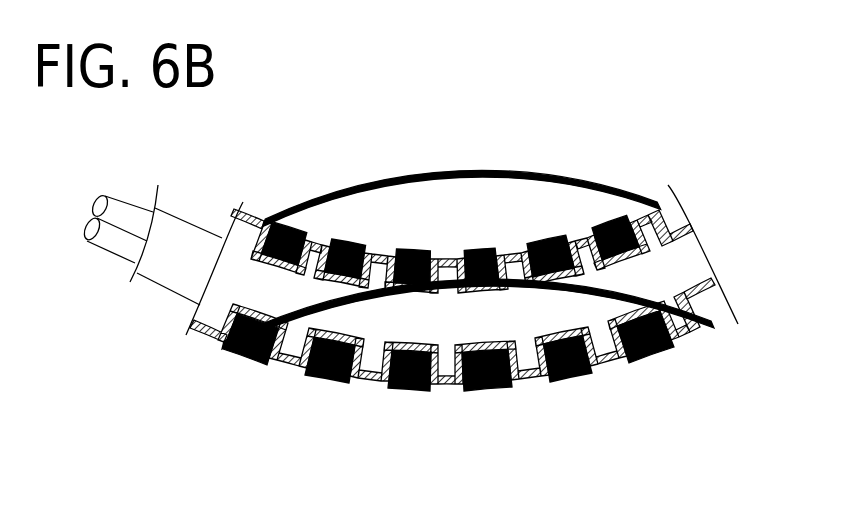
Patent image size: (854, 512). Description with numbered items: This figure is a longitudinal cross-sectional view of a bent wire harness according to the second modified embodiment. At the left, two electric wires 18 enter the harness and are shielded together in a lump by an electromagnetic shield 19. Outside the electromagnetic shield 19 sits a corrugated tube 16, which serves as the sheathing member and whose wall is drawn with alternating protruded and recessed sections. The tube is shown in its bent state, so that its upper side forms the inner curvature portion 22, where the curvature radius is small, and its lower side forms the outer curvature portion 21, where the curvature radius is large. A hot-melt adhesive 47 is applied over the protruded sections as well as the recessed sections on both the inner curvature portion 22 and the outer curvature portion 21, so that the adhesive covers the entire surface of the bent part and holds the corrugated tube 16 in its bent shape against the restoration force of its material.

The corrugated tube 16 is at (253, 207).
The electric wire 18 is at (126, 197).
The electromagnetic shield 19 is at (192, 221).
The outer curvature portion 21 is at (197, 428).
The inner curvature portion 22 is at (462, 218).
The hot-melt adhesive 47 is at (678, 178).